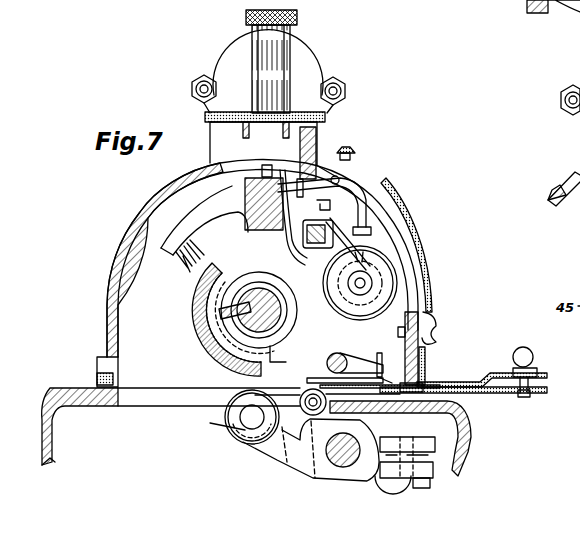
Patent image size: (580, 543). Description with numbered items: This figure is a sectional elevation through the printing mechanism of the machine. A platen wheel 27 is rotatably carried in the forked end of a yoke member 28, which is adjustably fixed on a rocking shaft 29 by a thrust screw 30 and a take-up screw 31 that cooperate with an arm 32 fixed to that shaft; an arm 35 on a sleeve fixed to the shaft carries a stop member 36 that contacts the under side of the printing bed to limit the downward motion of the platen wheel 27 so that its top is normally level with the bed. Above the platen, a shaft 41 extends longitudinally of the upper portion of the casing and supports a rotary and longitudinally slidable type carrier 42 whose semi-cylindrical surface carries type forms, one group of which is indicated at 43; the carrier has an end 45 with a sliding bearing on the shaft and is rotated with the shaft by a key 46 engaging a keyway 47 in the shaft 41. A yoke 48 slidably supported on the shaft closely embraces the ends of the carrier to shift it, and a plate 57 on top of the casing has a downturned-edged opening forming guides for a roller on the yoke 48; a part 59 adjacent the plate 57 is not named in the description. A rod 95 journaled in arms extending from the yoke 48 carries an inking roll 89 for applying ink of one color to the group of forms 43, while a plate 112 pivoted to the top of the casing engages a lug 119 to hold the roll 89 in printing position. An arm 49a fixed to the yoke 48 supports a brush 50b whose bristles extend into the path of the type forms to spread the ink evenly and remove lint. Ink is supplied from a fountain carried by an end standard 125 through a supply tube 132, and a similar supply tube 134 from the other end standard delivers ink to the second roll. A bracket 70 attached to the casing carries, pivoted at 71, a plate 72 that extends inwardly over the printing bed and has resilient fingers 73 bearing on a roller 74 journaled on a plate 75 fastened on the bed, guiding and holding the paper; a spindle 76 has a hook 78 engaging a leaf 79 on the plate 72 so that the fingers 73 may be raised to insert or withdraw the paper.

The end standard 125 is at (308, 58).
The plate 57 is at (225, 123).
The lugs 59 is at (248, 132).
The supply tube 132 is at (362, 188).
The supply tube 134 is at (370, 232).
The yoke 48 is at (245, 200).
The arm 49a is at (183, 215).
The lug 119 is at (313, 207).
The plate 112 is at (329, 230).
The brush 50b is at (180, 262).
The end of type carrier 45 is at (246, 272).
The rod 95 is at (295, 224).
The key 46 is at (270, 303).
The inking roll 89 is at (360, 283).
The keyway 47 is at (252, 326).
The shaft 41 is at (292, 338).
The spindle 76 is at (340, 353).
The leaf 79 is at (378, 353).
The hook 78 is at (382, 372).
The group of type forms 43 is at (205, 340).
The roller 74 is at (300, 392).
The resilient fingers 73 is at (330, 378).
The type carrier 42 is at (300, 395).
The platen wheel 27 is at (225, 420).
The plate 75 is at (392, 412).
The yoke member 28 is at (300, 470).
The shaft 29 is at (340, 468).
The take-up screw 31 is at (388, 492).
The thrust screw 30 is at (428, 486).
The arm 32 is at (448, 446).
The pivot 71 is at (432, 381).
The bracket 70 is at (538, 368).
The plate 72 is at (490, 393).
The stop member 36 is at (536, 9).
The arm 35 is at (558, 8).